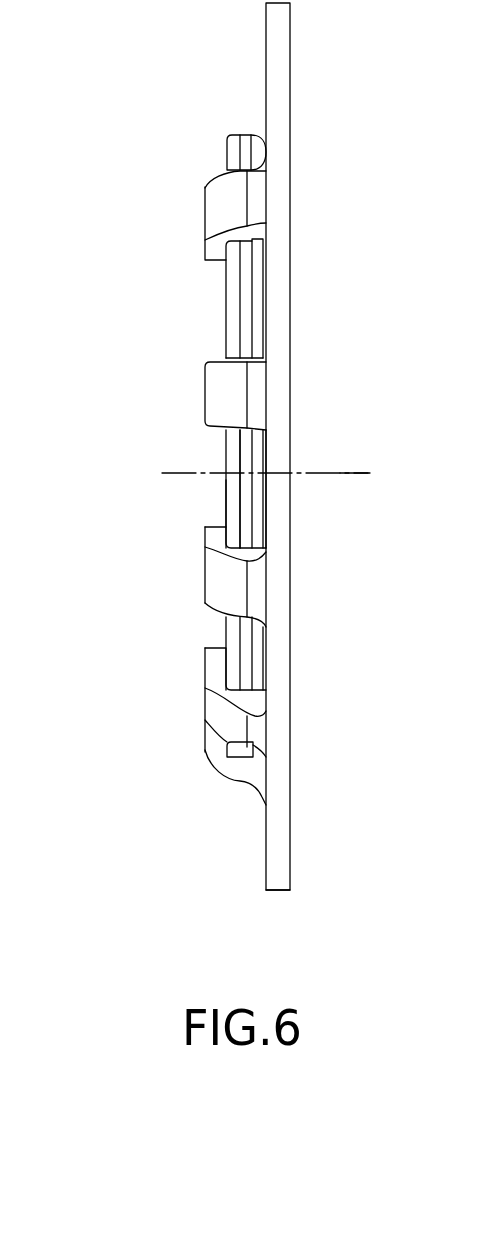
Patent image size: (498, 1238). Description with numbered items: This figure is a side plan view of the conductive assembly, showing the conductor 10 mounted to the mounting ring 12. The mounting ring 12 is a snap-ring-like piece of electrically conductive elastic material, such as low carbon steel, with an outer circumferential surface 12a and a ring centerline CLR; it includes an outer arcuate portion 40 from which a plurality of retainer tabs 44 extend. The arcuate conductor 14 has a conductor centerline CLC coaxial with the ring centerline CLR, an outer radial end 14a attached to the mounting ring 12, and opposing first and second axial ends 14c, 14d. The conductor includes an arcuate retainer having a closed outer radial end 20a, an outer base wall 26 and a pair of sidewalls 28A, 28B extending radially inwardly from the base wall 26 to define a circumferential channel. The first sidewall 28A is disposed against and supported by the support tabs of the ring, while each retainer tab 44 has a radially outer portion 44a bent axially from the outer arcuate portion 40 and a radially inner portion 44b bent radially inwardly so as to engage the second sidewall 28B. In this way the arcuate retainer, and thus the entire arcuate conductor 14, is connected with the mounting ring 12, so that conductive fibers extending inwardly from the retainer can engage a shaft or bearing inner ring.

The conductor 10 is at (120, 108).
The mounting ring 12 is at (332, 100).
The outer circumferential surface 12a is at (278, 890).
The outer arcuate portion 40 is at (291, 57).
The closed outer radial end 20a is at (237, 115).
The arcuate conductor 14 is at (185, 326).
The outer radial end 14a is at (262, 448).
The first axial end 14c is at (292, 528).
The second axial end 14d is at (200, 493).
The outer base wall 26 is at (247, 323).
The first sidewall 28A is at (267, 290).
The second sidewall 28B is at (227, 282).
The retainer tab 44 is at (192, 185).
The radially outer portion 44a is at (255, 200).
The radially inner portion 44b is at (203, 225).
The ring centerline CLR is at (300, 473).
The conductor centerline CLC is at (389, 449).